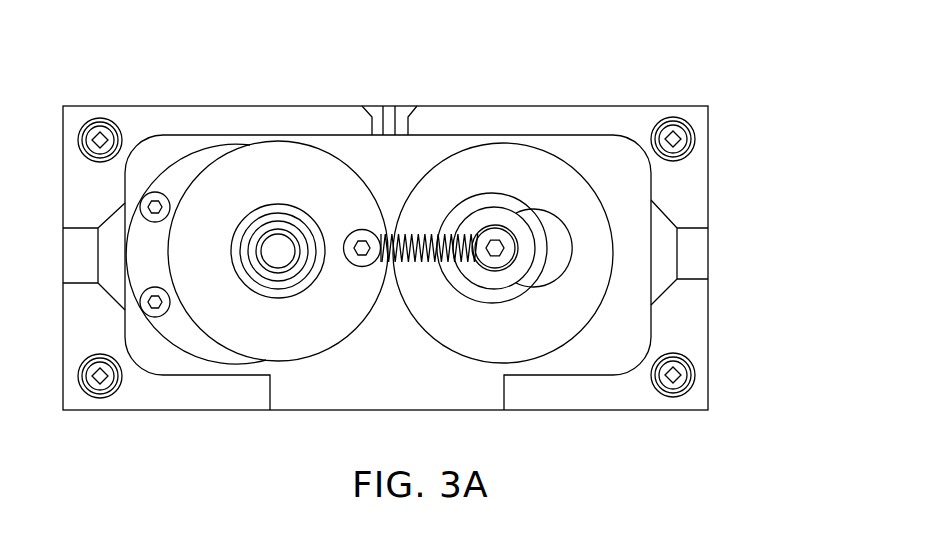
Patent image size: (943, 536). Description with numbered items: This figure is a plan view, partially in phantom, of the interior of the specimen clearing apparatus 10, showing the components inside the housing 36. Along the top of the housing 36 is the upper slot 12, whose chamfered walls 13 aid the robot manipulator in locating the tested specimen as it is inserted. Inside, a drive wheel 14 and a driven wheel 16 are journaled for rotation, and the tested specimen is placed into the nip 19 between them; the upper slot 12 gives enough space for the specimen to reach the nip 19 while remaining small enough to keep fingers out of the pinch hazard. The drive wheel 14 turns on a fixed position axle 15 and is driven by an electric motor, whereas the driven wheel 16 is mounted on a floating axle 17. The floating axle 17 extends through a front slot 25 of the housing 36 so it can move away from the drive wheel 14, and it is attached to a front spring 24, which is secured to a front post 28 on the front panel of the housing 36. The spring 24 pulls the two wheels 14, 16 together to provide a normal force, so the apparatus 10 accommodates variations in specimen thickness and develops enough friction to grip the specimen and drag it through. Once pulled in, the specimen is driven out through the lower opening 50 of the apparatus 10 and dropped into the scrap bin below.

The specimen clearing apparatus 10 is at (697, 84).
The upper slot 12 is at (408, 103).
The chamfered walls 13 is at (366, 107).
The drive wheel 14 is at (267, 168).
The fixed position axle 15 is at (287, 258).
The driven wheel 16 is at (525, 167).
The floating axle 17 is at (507, 253).
The nip 19 is at (388, 213).
The front spring 24 is at (405, 232).
The front slot 25 is at (562, 217).
The front post 28 is at (383, 270).
The housing 36 is at (697, 374).
The lower opening 50 is at (215, 412).